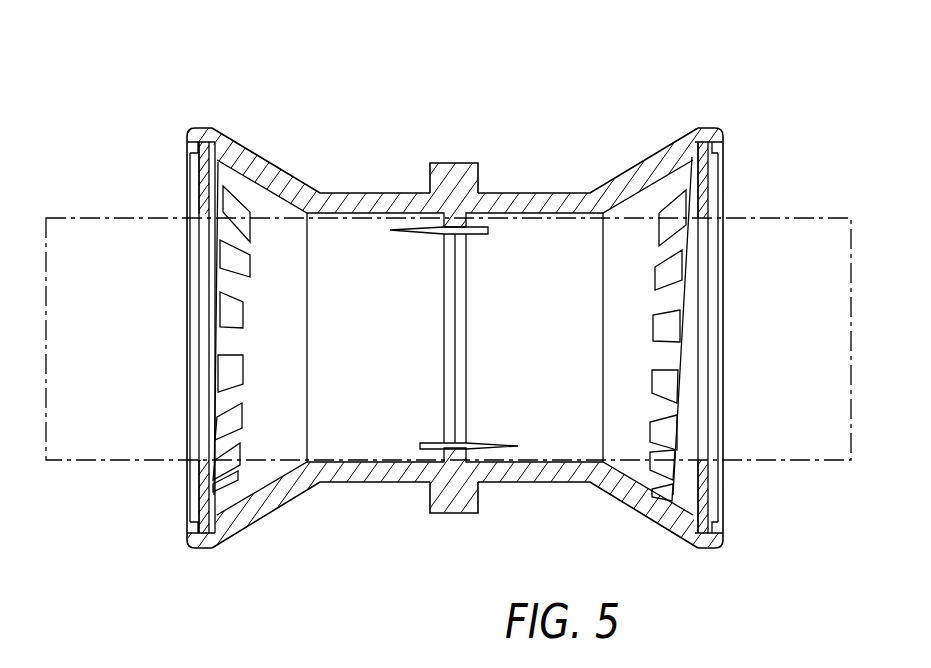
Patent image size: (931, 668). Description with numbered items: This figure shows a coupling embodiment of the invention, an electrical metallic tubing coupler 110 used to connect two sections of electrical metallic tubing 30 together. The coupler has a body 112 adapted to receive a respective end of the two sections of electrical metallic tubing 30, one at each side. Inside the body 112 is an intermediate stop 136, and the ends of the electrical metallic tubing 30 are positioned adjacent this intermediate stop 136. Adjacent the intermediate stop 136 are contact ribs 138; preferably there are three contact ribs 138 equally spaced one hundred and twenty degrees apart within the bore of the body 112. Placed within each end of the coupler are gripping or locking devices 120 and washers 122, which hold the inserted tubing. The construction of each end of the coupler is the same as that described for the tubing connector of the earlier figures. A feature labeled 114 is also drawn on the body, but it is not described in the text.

The electrical metallic tubing coupler 110 is at (465, 334).
The body 112 is at (412, 483).
The upper boss 114 is at (455, 160).
The gripping or locking devices 120 is at (203, 255).
The washers 122 is at (200, 500).
The intermediate stop 136 is at (469, 314).
The contact ribs 138 is at (422, 232).
The electrical metallic tubing 30 is at (138, 218).